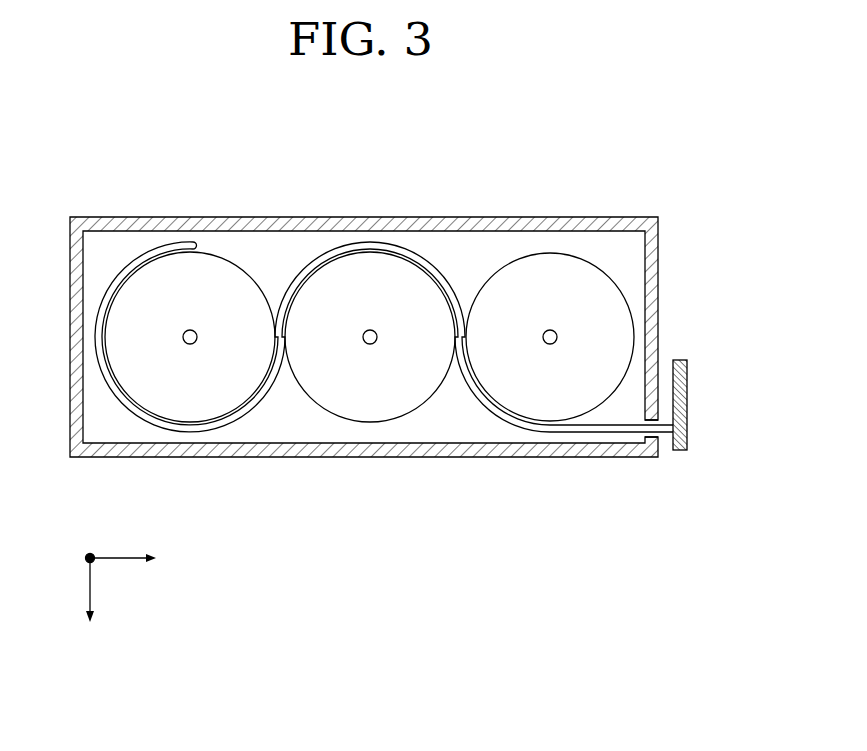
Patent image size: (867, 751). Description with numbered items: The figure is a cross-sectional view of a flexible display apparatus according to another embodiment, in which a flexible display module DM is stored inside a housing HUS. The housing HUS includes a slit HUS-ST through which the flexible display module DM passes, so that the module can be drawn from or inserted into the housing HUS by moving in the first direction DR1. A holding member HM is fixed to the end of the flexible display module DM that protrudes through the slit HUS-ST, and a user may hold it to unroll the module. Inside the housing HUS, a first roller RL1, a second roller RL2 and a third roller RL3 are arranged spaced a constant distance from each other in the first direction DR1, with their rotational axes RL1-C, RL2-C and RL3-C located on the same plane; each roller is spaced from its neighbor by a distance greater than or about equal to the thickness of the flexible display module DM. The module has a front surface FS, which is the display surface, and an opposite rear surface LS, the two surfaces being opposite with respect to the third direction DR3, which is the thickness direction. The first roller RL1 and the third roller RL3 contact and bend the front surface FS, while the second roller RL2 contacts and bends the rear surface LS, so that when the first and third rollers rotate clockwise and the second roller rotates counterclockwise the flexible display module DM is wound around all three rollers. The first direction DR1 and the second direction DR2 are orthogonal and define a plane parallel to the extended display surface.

The housing HUS is at (491, 224).
The slit HUS-ST is at (641, 432).
The first roller RL1 is at (587, 277).
The rotational axis of the first roller RL1-C is at (550, 330).
The second roller RL2 is at (405, 277).
The rotational axis of the second roller RL2-C is at (370, 330).
The third roller RL3 is at (225, 277).
The rotational axis of the third roller RL3-C is at (189, 330).
The flexible display module DM is at (384, 410).
The front surface FS is at (605, 421).
The rear surface LS is at (562, 433).
The holding member HM is at (687, 388).
The first direction DR1 is at (143, 560).
The second direction DR2 is at (68, 560).
The third direction DR3 is at (90, 604).